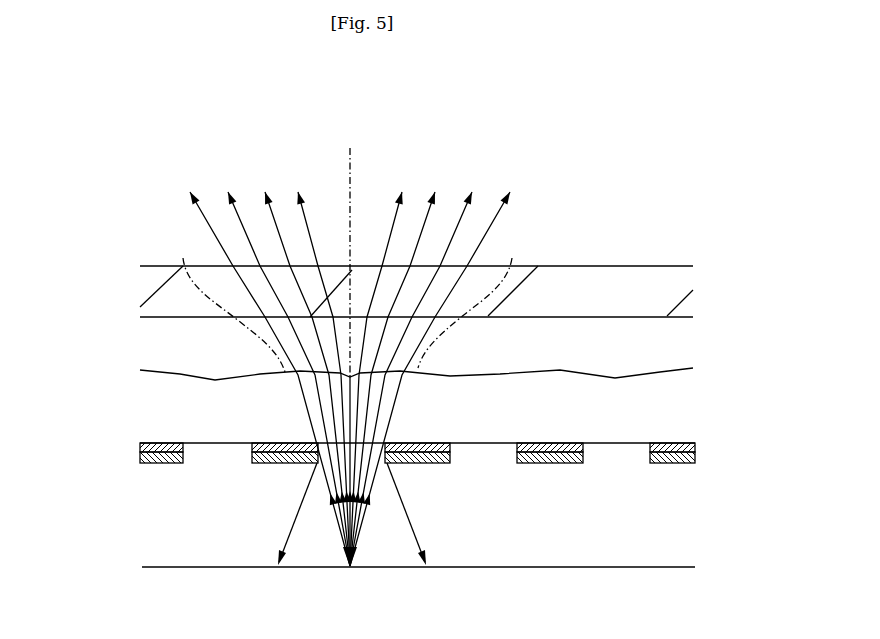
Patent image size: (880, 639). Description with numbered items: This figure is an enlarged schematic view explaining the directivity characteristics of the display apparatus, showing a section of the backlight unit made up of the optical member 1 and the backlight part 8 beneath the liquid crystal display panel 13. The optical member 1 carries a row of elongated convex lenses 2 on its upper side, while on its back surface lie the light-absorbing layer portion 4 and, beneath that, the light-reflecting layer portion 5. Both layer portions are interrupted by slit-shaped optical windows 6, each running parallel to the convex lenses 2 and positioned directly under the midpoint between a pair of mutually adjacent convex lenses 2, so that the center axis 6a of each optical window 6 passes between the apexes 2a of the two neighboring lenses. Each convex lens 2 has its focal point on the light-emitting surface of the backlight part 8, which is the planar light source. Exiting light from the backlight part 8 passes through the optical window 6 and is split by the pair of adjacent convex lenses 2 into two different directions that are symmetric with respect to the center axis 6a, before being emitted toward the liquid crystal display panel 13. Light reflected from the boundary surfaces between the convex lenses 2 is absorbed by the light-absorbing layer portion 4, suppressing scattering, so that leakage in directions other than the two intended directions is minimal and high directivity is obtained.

The optical member 1 is at (697, 362).
The convex lens 2 is at (144, 370).
The apex 2a is at (346, 299).
The light-absorbing layer portion 4 is at (672, 442).
The light-reflecting layer portion 5 is at (672, 463).
The optical window 6 is at (347, 444).
The center axis 6a is at (352, 170).
The backlight part 8 is at (162, 567).
The liquid crystal display panel 13 is at (627, 266).